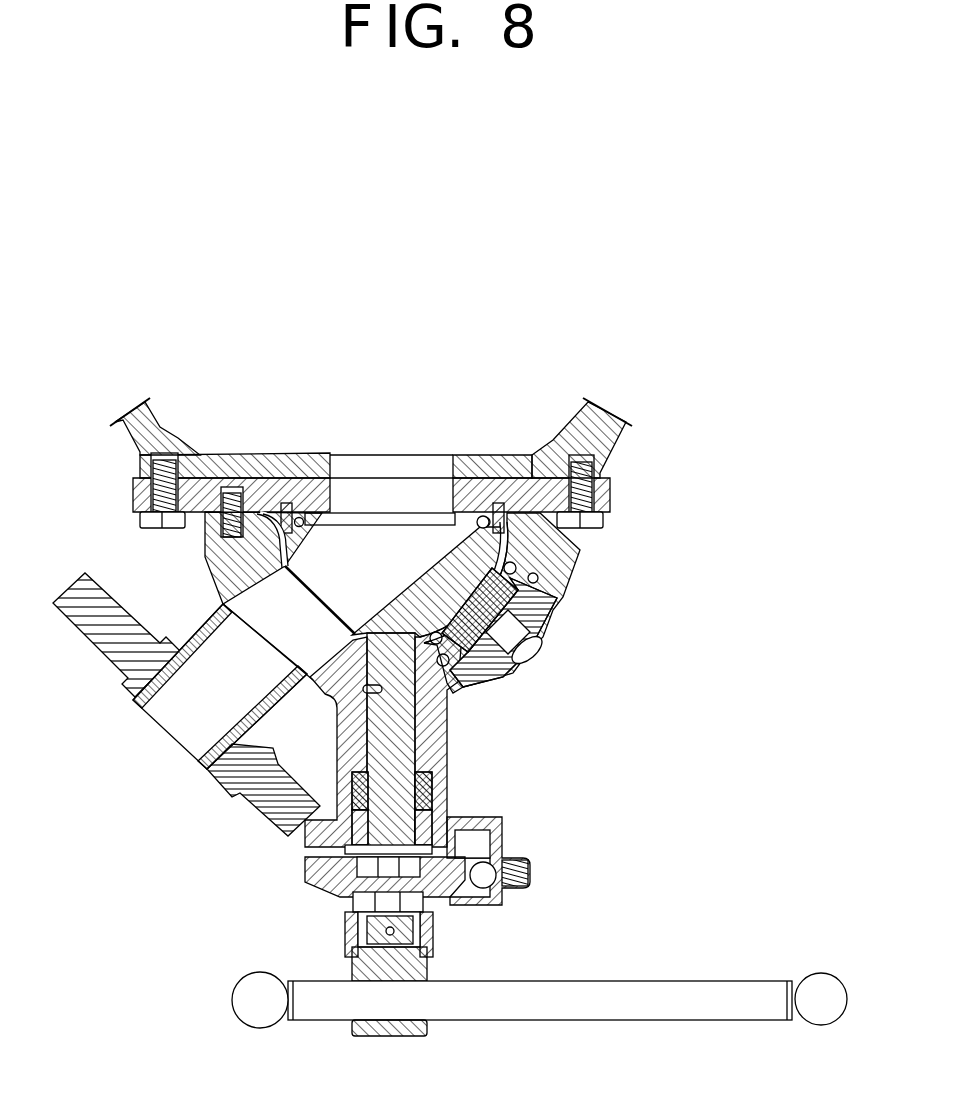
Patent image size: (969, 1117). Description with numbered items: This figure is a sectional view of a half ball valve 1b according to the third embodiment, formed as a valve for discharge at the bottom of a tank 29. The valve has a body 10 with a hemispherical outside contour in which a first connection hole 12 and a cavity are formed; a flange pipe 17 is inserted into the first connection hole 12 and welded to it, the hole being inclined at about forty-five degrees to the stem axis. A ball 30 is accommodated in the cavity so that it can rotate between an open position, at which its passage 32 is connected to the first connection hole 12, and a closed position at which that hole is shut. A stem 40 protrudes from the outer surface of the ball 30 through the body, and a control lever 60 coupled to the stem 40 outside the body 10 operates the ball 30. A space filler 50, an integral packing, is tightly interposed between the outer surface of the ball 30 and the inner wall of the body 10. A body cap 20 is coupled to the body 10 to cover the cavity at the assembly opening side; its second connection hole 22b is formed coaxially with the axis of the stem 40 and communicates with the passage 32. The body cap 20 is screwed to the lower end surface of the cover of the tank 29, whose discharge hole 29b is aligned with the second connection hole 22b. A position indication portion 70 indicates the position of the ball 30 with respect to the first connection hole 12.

The half ball valve 1b is at (692, 484).
The body 10 is at (450, 691).
The first connection hole 12 is at (283, 614).
The flange pipe 17 is at (276, 817).
The body cap 20 is at (490, 476).
The second connection hole 22b is at (390, 488).
The tank 29 is at (596, 408).
The discharge hole 29b is at (437, 462).
The ball 30 is at (538, 578).
The passage 32 is at (326, 558).
The stem 40 is at (376, 748).
The space filler 50 is at (266, 545).
The control lever 60 is at (474, 966).
The position indication portion 70 is at (530, 841).